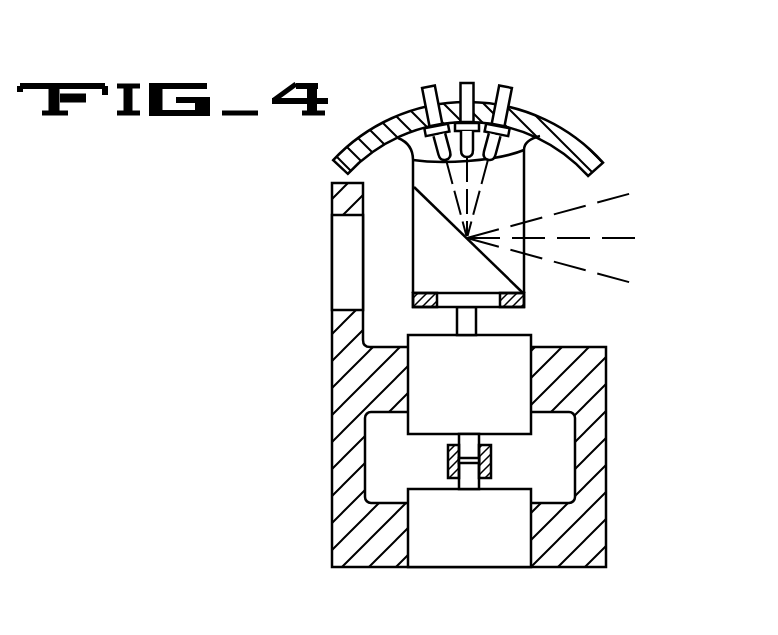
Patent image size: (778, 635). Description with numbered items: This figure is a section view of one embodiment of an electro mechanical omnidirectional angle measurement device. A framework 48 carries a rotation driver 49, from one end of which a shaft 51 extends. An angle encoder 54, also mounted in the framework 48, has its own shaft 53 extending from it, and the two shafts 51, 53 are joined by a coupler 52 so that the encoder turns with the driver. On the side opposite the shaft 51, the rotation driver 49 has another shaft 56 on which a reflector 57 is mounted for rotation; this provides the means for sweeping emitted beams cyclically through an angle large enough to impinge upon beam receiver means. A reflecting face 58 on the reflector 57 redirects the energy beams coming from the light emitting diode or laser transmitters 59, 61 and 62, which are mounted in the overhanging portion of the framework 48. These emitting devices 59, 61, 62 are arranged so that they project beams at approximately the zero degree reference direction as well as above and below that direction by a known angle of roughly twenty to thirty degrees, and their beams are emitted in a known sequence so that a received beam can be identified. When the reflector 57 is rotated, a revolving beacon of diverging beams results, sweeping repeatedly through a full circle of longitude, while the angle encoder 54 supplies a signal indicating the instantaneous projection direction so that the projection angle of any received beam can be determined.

The framework 48 is at (593, 393).
The rotation driver 49 is at (485, 398).
The shaft 51 is at (462, 437).
The coupler 52 is at (488, 450).
The shaft 53 is at (468, 483).
The angle encoder 54 is at (488, 546).
The shaft 56 is at (477, 320).
The reflector 57 is at (420, 253).
The reflecting face 58 is at (437, 205).
The laser transmitter 59 is at (367, 133).
The laser transmitter 61 is at (488, 112).
The laser transmitter 62 is at (520, 133).